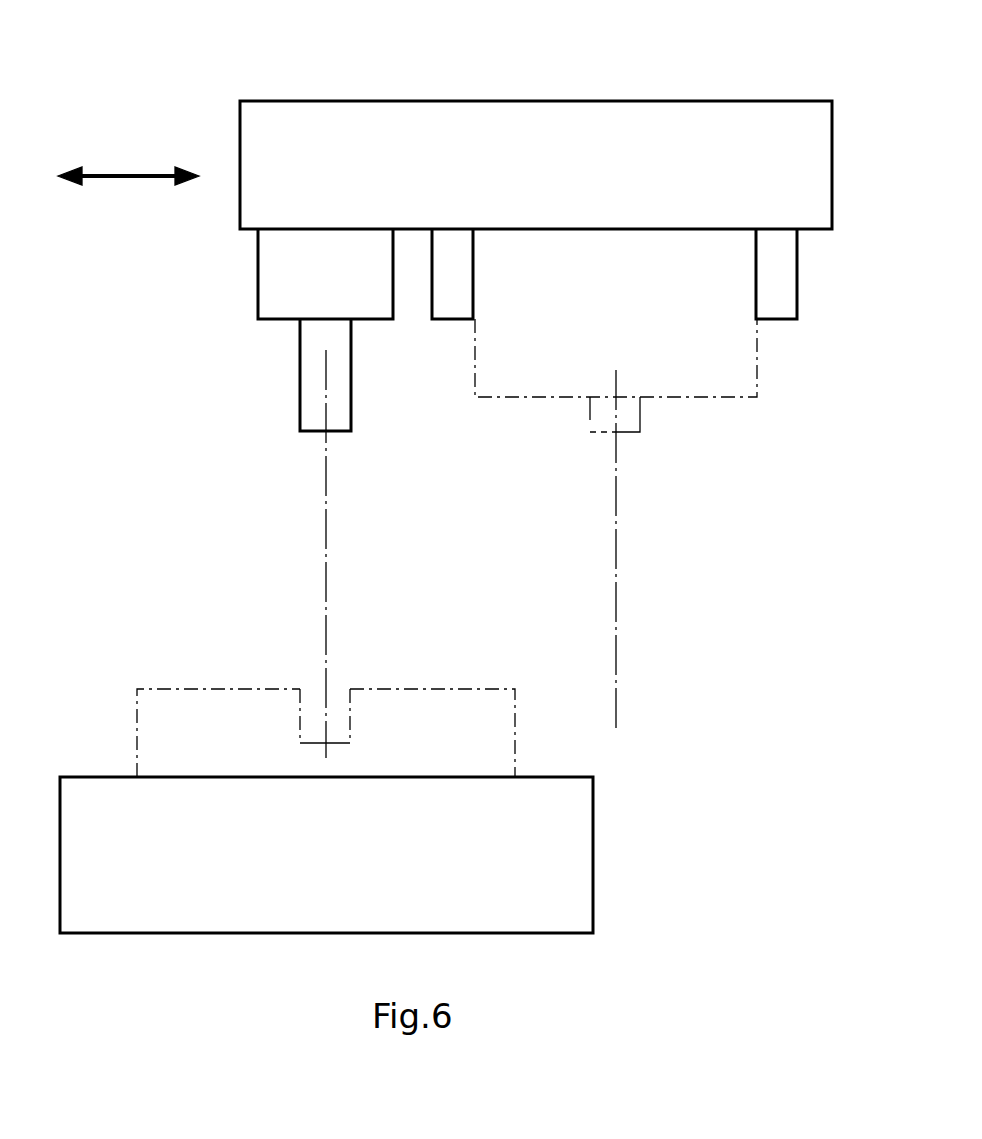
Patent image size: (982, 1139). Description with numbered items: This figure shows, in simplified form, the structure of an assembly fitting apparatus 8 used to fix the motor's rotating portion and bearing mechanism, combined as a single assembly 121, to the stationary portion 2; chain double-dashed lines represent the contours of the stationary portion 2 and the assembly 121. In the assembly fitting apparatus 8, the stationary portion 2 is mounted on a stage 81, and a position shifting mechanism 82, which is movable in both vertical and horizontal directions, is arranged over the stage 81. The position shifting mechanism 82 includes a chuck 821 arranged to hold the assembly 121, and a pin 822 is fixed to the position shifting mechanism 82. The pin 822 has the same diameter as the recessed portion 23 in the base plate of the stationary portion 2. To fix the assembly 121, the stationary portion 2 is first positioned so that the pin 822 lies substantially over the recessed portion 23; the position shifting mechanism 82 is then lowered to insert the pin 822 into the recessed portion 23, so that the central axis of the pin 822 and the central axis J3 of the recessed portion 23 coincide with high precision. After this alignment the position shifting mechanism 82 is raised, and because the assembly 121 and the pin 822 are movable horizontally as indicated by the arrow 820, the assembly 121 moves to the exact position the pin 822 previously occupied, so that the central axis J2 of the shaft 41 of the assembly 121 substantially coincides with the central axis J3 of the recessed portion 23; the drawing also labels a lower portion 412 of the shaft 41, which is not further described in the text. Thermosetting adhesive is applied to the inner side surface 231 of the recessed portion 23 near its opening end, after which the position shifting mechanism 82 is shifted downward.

The assembly fitting apparatus 8 is at (238, 74).
The position shifting mechanism 82 is at (362, 115).
The arrow 820 is at (130, 180).
The chuck 821 is at (783, 310).
The pin 822 is at (311, 416).
The assembly 121 is at (716, 399).
The shaft 41 is at (631, 437).
The recess of drive element 412 is at (588, 425).
The central axis J2 is at (616, 676).
The central axis J3 is at (326, 571).
The stationary portion 2 is at (183, 688).
The recessed portion 23 is at (302, 665).
The inner side surface 231 is at (302, 720).
The stage 81 is at (238, 920).